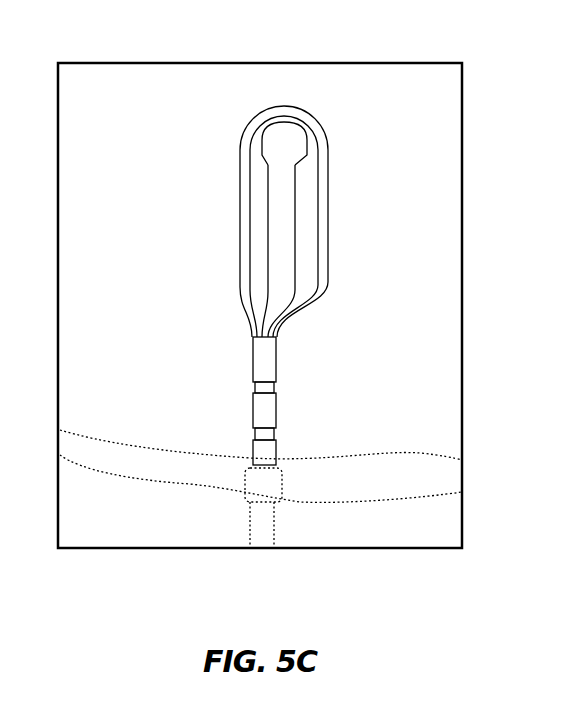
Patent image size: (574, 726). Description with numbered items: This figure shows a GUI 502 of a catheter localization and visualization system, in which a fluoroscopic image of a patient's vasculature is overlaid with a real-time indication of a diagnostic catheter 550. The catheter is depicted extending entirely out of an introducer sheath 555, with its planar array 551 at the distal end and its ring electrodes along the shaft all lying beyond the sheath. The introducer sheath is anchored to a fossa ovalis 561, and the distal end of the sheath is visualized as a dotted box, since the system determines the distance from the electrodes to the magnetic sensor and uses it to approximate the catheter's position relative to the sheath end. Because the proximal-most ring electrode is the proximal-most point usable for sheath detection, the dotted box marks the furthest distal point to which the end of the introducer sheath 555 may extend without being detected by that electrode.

The GUI 502 is at (181, 52).
The diagnostic catheter 550 is at (340, 223).
The planar array 551 is at (234, 206).
The introducer sheath 555 is at (292, 480).
The fossa ovalis 561 is at (417, 453).